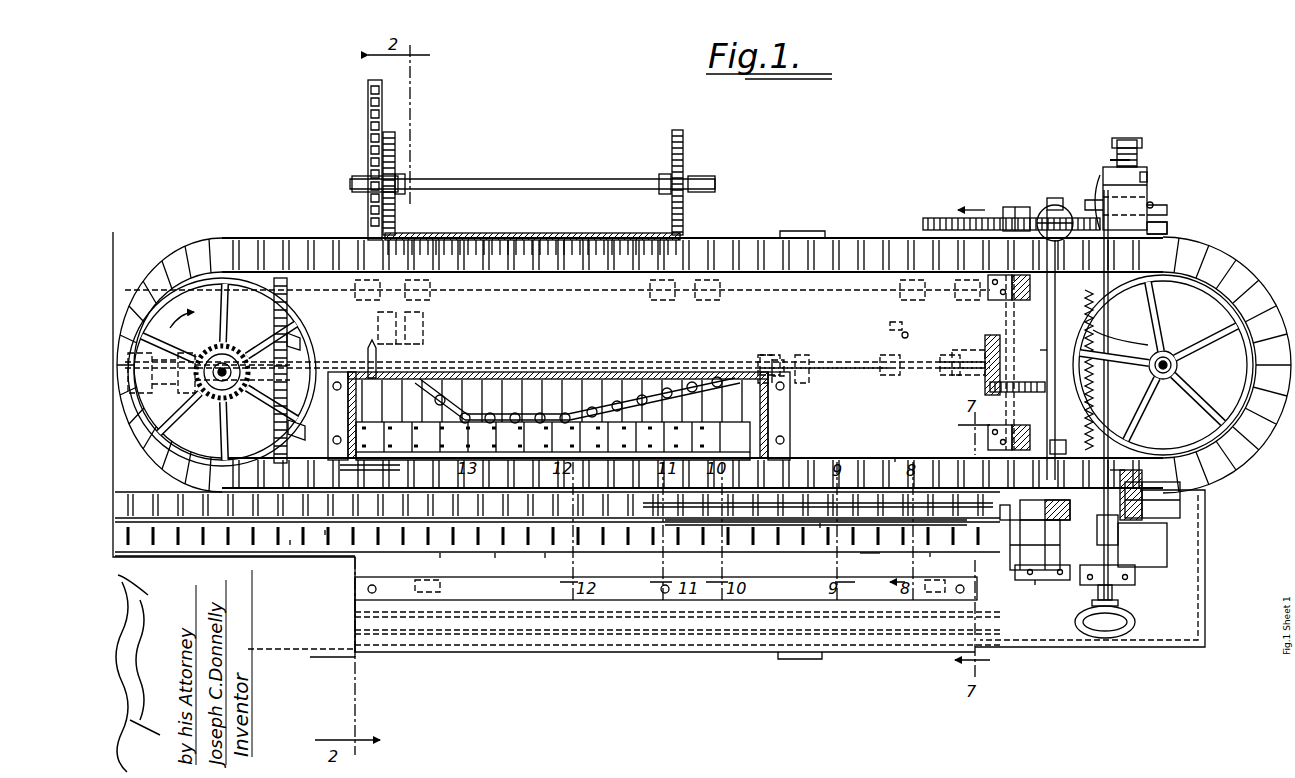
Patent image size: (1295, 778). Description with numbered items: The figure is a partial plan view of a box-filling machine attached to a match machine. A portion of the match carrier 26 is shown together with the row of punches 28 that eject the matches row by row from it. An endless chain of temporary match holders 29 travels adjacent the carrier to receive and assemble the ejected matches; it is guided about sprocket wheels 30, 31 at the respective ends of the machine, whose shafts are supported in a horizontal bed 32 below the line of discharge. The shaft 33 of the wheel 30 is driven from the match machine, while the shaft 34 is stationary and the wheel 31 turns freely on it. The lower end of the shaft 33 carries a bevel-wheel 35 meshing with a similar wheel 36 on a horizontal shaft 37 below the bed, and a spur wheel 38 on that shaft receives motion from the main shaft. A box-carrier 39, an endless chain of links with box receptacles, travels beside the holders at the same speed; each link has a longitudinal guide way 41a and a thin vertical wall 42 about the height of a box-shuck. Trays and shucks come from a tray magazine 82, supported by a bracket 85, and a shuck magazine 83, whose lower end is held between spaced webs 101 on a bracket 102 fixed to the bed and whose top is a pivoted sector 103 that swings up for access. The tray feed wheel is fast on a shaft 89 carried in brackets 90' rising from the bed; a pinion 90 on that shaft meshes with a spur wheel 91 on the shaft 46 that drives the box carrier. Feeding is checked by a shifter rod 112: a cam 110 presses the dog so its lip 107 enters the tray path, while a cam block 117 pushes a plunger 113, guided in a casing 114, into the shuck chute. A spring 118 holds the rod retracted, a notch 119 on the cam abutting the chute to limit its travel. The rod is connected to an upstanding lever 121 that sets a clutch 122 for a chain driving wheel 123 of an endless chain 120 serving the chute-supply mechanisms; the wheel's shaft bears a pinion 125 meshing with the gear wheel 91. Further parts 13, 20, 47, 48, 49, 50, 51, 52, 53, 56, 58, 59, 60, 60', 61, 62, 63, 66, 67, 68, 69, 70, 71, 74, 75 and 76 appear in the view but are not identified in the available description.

The guide bar 13 is at (470, 560).
The link 20 is at (1120, 333).
The match carrier 26 is at (540, 238).
The punches 28 is at (598, 236).
The endless chain of temporary match holders 29 is at (165, 250).
The sprocket wheel 30 is at (236, 282).
The sprocket wheel 31 is at (1250, 260).
The horizontal bed 32 is at (742, 240).
The shaft 33 is at (226, 372).
The shaft 34 is at (1168, 360).
The bevel-wheel 35 is at (298, 334).
The bevel wheel 36 is at (203, 398).
The horizontal shaft 37 is at (525, 372).
The spur wheel 38 is at (284, 276).
The box-carrier 39 is at (445, 560).
The longitudinal groove or guide way 41a is at (325, 532).
The vertical wall 42 is at (290, 540).
The shaft 46 is at (1008, 324).
The rack 47 is at (985, 366).
The pinion 48 is at (960, 360).
The rod 49 is at (805, 380).
The pin 50 is at (900, 312).
The pin 51 is at (898, 334).
The hatched rail 52 is at (722, 372).
The end plate 53 is at (752, 440).
The end plate 56 is at (335, 457).
The bearing 58 is at (418, 348).
The inclined guide 59 is at (432, 384).
The stop 60 is at (349, 344).
The stop 60' is at (775, 355).
The roller chain 61 is at (587, 400).
The bracket 62 is at (900, 460).
The rod 63 is at (758, 502).
The rod 66 is at (820, 528).
The rod 67 is at (702, 528).
The bar 68 is at (498, 560).
The bar 69 is at (868, 558).
The bar 70 is at (545, 560).
The bar 71 is at (938, 555).
The rod 74 is at (610, 620).
The rod 75 is at (700, 650).
The rod 76 is at (668, 640).
The tray magazine 82 is at (1182, 492).
The shuck magazine 83 is at (1062, 442).
The bracket 85 is at (1178, 510).
The horizontal shaft 89 is at (1058, 205).
The pinion 90 is at (1019, 309).
The brackets 90' is at (987, 306).
The spur wheel 91 is at (990, 216).
The spaced webs 101 is at (1040, 565).
The bracket 102 is at (1040, 582).
The sector 103 is at (1022, 560).
The inturned lip 107 is at (1130, 496).
The cam 110 is at (1118, 470).
The shifter rod 112 is at (1047, 352).
The plunger 113 is at (1090, 632).
The casing 114 is at (1075, 585).
The cam block 117 is at (1167, 541).
The spring 118 is at (1093, 330).
The notch 119 is at (1168, 526).
The endless chain 120 is at (1167, 205).
The upstanding lever 121 is at (1115, 158).
The clutch 122 is at (1150, 190).
The chain driving wheel 123 is at (1155, 205).
The pinion 125 is at (1168, 228).